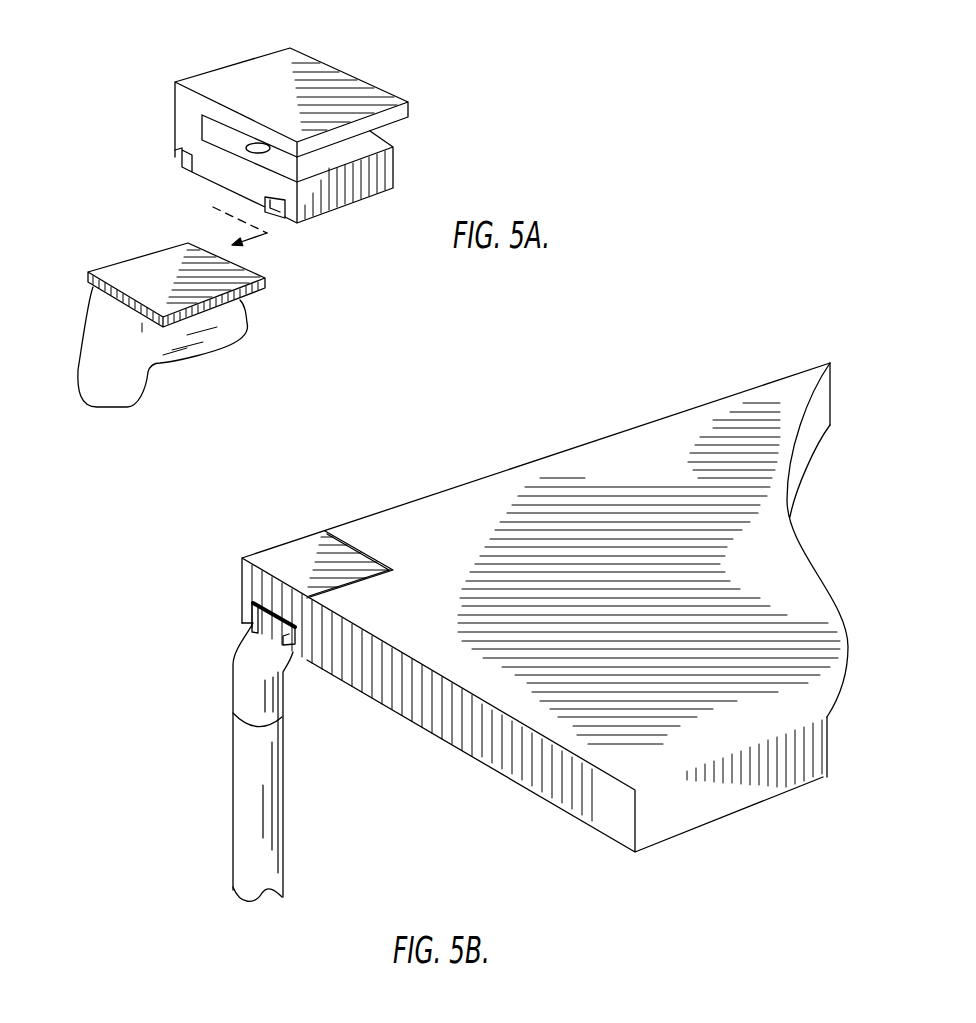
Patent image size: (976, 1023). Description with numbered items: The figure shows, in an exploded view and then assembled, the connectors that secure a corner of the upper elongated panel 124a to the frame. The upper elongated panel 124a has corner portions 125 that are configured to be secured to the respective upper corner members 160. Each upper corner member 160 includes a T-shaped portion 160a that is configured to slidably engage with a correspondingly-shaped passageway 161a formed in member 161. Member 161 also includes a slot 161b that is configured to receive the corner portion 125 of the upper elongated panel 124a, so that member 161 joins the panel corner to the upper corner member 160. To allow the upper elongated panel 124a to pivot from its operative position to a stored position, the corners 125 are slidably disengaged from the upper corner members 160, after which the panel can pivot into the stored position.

In FIG. 5A, the member 161 is at (353, 90).
In FIG. 5A, the passageway 161a is at (220, 163).
In FIG. 5A, the slot 161b is at (370, 155).
In FIG. 5A, the T-shaped portion 160a is at (115, 275).
In FIG. 5A, the upper corner member 160 is at (222, 335).
In FIG. 5B, the upper corner member 160 is at (247, 682).
In FIG. 5B, the corner portion 125 is at (358, 553).
In FIG. 5B, the upper elongated panel 124a is at (633, 472).